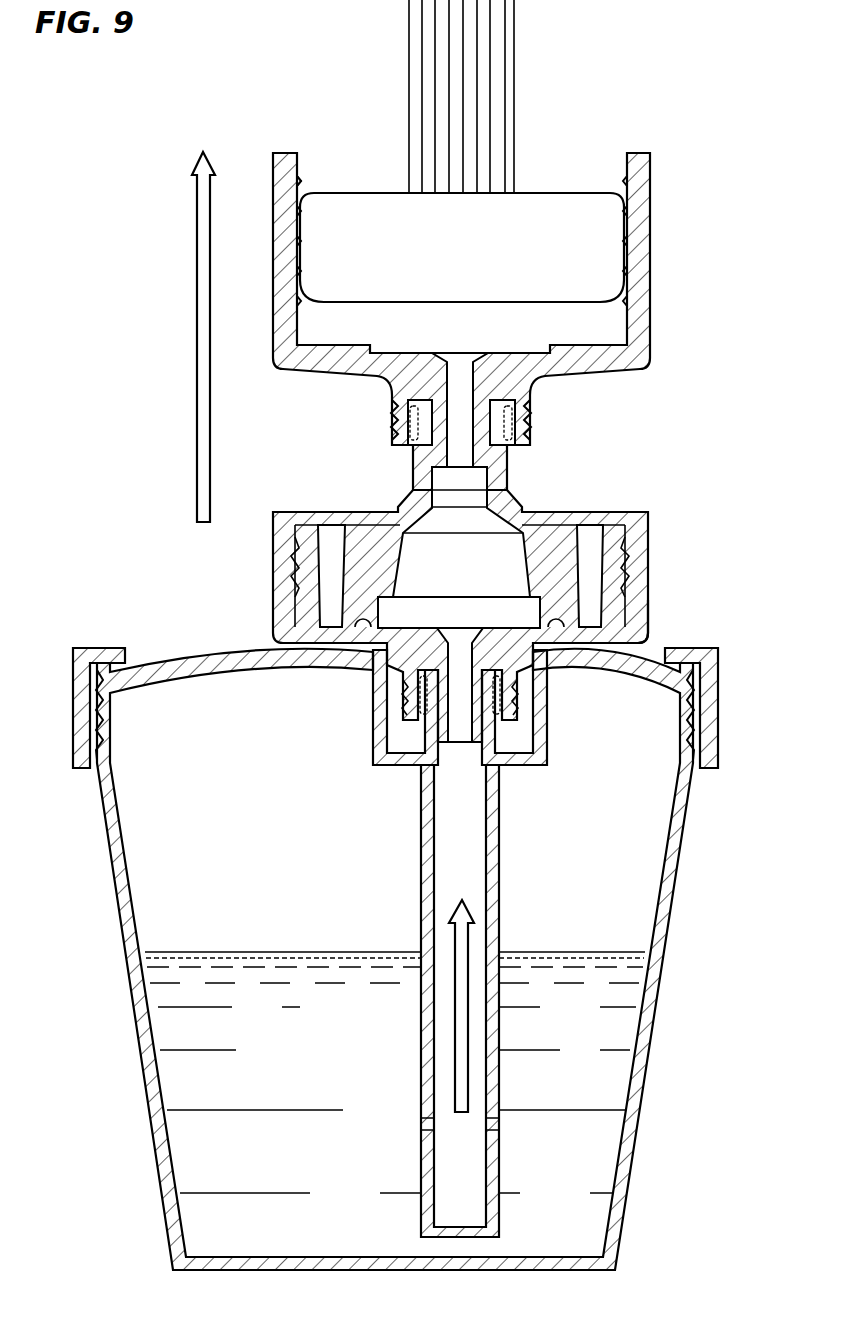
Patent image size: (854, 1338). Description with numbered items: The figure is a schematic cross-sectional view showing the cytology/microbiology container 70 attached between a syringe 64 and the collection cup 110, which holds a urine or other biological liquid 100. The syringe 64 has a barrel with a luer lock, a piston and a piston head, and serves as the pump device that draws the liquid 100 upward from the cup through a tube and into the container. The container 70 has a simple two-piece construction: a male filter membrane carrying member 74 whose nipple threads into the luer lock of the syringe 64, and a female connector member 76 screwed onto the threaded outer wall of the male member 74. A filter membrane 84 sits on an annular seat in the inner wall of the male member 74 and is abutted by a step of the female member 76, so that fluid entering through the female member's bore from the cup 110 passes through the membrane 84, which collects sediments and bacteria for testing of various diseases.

The syringe 64 is at (658, 281).
The cytology/microbiology container 70 is at (662, 555).
The male filter membrane carrying member 74 is at (562, 512).
The female connector member 76 is at (652, 612).
The filter membrane 84 is at (473, 625).
The biological liquid 100 is at (598, 1090).
The collection cup 110 is at (676, 918).